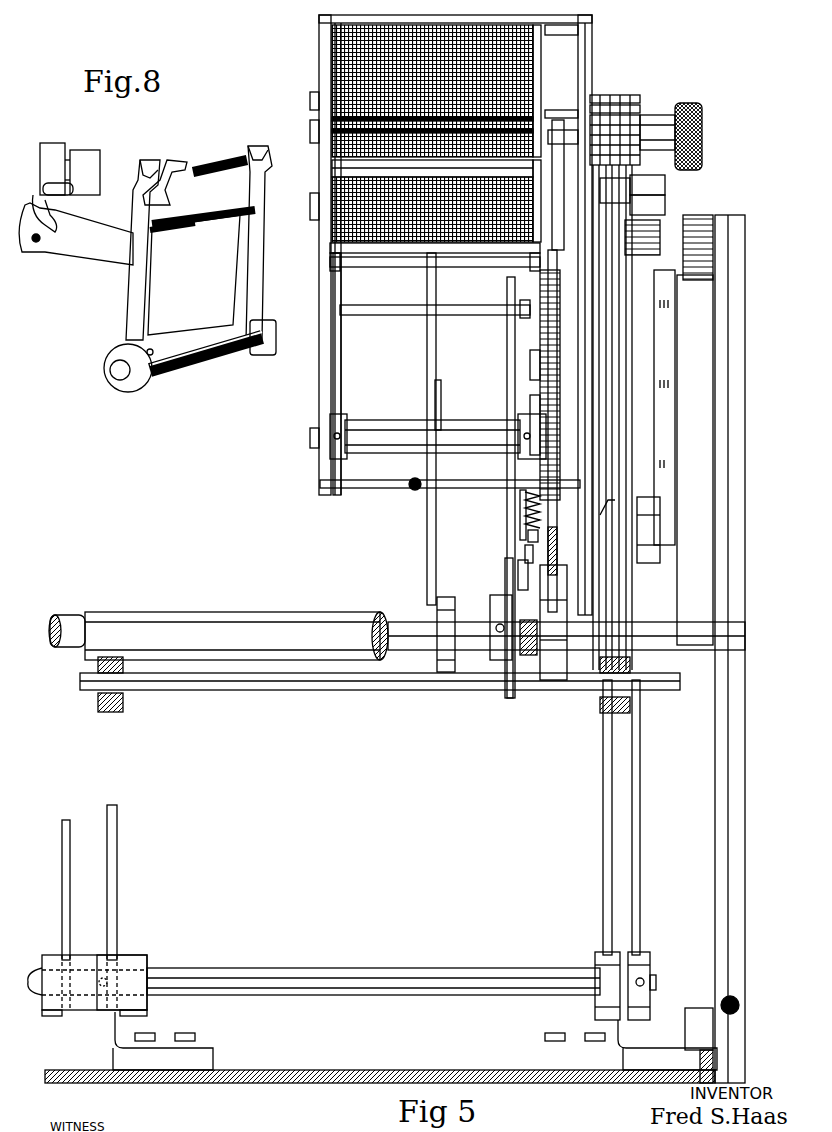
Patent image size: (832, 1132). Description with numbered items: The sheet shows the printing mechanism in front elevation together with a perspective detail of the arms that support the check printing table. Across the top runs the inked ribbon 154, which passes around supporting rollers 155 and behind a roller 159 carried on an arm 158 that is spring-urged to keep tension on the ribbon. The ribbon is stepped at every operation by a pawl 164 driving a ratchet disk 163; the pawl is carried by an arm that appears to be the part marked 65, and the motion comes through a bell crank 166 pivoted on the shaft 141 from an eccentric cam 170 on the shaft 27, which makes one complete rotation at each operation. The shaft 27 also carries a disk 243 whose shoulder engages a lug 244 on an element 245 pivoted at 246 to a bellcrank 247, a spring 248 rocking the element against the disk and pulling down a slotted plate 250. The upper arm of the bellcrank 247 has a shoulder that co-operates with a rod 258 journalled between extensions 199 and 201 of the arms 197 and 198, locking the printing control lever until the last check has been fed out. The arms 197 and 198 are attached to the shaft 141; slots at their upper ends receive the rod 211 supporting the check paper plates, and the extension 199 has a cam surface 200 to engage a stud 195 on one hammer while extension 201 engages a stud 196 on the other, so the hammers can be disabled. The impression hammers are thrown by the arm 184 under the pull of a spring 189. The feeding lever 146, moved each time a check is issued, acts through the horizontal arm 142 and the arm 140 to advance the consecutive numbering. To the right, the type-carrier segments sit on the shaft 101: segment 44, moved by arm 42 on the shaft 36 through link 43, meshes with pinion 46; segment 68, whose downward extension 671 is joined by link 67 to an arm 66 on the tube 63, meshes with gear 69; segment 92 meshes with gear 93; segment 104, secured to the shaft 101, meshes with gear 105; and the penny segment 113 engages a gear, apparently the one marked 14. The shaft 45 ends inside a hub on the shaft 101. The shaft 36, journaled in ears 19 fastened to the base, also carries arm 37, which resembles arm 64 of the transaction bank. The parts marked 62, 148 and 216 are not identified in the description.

In FIG. 5, the gear 14 is at (595, 95).
In FIG. 5, the ears 19 is at (170, 1045).
In FIG. 5, the shaft 27 is at (405, 630).
In FIG. 5, the shaft 36 is at (656, 980).
In FIG. 5, the arm 37 is at (117, 914).
In FIG. 5, the arm 42 is at (640, 955).
In FIG. 5, the link 43 is at (638, 815).
In FIG. 5, the segment 44 is at (655, 185).
In FIG. 5, the shaft 45 is at (642, 237).
In FIG. 5, the pinion 46 is at (628, 95).
In FIG. 5, the block 62 is at (88, 1012).
In FIG. 5, the tube 63 is at (373, 996).
In FIG. 5, the arm 64 is at (70, 918).
In FIG. 5, the rack 65 is at (553, 372).
In FIG. 5, the arm 66 is at (603, 955).
In FIG. 5, the link 67 is at (603, 808).
In FIG. 5, the segment 68 is at (655, 203).
In FIG. 5, the gear 69 is at (615, 95).
In FIG. 5, the segment 92 is at (626, 196).
In FIG. 5, the gear 93 is at (588, 112).
In FIG. 5, the shaft 101 is at (397, 641).
In FIG. 5, the segment 104 is at (600, 260).
In FIG. 5, the gear 105 is at (605, 95).
In FIG. 5, the segment 113 is at (595, 300).
In FIG. 5, the arm 140 is at (451, 375).
In FIG. 8, the shaft 141 is at (188, 352).
In FIG. 5, the shaft 141 is at (392, 435).
In FIG. 5, the horizontal arm 142 is at (525, 385).
In FIG. 5, the feeding lever 146 is at (527, 515).
In FIG. 5, the knob 148 is at (702, 140).
In FIG. 5, the inked ribbon 154 is at (345, 72).
In FIG. 5, the supporting rollers 155 is at (561, 43).
In FIG. 5, the arm 158 is at (550, 193).
In FIG. 5, the roller 159 is at (335, 176).
In FIG. 5, the ratchet disk 163 is at (547, 200).
In FIG. 5, the pawl 164 is at (548, 110).
In FIG. 5, the bell crank 166 is at (548, 368).
In FIG. 5, the eccentric cam 170 is at (437, 657).
In FIG. 5, the arm 184 is at (432, 558).
In FIG. 5, the spring 189 is at (412, 490).
In FIG. 8, the stud 195 is at (45, 170).
In FIG. 8, the stud 196 is at (172, 160).
In FIG. 8, the arm 197 is at (137, 300).
In FIG. 5, the arm 197 is at (345, 355).
In FIG. 8, the arm 198 is at (238, 277).
In FIG. 5, the arm 198 is at (530, 332).
In FIG. 8, the extension 199 is at (76, 234).
In FIG. 8, the cam surface 200 is at (48, 202).
In FIG. 8, the extension 201 is at (205, 220).
In FIG. 8, the rod 211 is at (208, 165).
In FIG. 5, the rod 211 is at (435, 271).
In FIG. 5, the lever 216 is at (548, 335).
In FIG. 5, the disk 243 is at (507, 690).
In FIG. 5, the lug 244 is at (503, 592).
In FIG. 5, the element 245 is at (545, 431).
In FIG. 5, the pivot 246 is at (500, 565).
In FIG. 5, the bellcrank 247 is at (518, 515).
In FIG. 5, the spring 248 is at (522, 500).
In FIG. 5, the plate 250 is at (520, 478).
In FIG. 8, the rod 258 is at (167, 232).
In FIG. 5, the rod 258 is at (435, 321).
In FIG. 5, the downward extension 671 is at (615, 492).